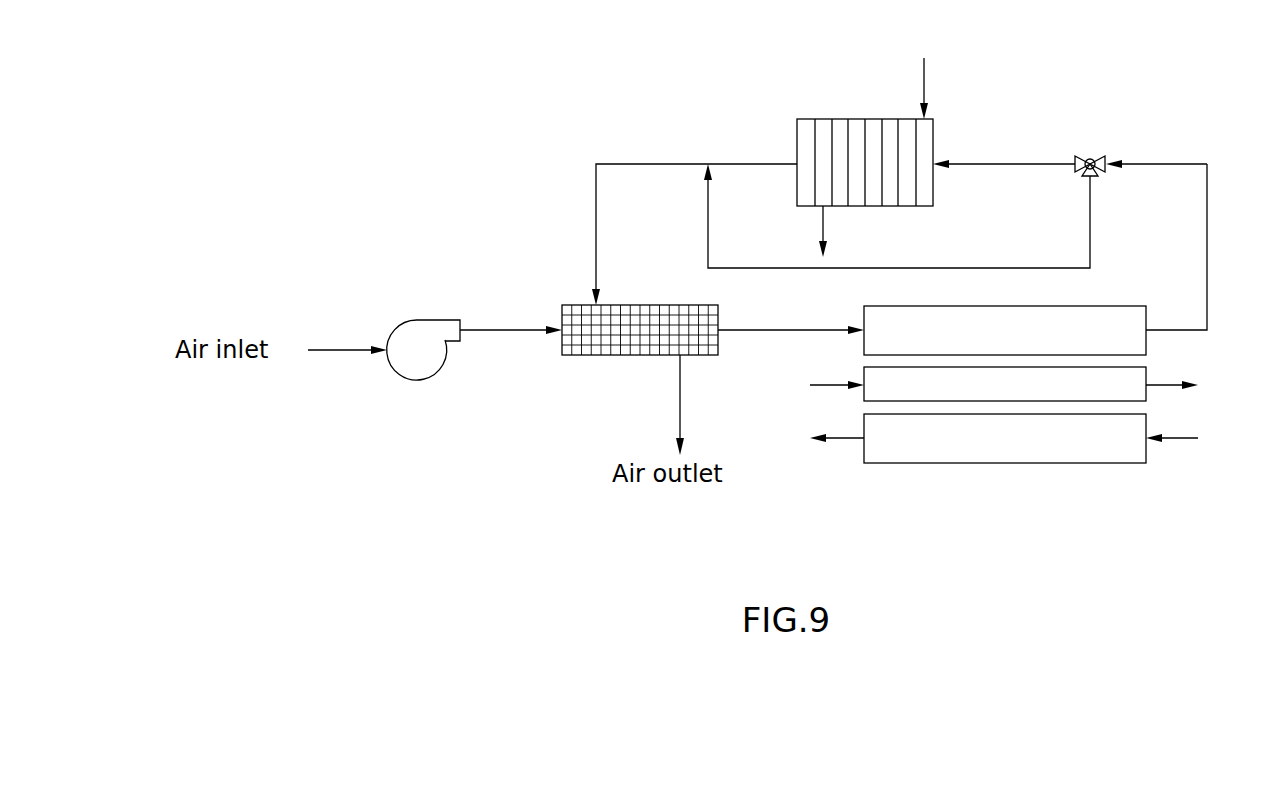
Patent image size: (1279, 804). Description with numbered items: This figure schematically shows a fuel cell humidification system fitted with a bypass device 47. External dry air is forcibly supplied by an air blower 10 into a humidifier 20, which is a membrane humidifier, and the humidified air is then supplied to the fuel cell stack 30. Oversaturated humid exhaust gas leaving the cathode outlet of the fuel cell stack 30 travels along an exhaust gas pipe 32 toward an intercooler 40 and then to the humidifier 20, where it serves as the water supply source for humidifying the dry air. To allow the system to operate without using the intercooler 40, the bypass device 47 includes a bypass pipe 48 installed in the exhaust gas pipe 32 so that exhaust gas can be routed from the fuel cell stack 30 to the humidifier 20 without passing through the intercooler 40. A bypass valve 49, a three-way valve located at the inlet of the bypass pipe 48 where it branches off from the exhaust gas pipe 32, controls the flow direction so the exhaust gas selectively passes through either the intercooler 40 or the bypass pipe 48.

The air blower 10 is at (416, 380).
The humidifier 20 is at (582, 355).
The fuel cell stack 30 is at (850, 476).
The exhaust gas pipe 32 is at (1040, 164).
The intercooler 40 is at (797, 119).
The bypass device 47 is at (1122, 212).
The bypass pipe 48 is at (1005, 268).
The bypass valve 49 is at (1102, 177).